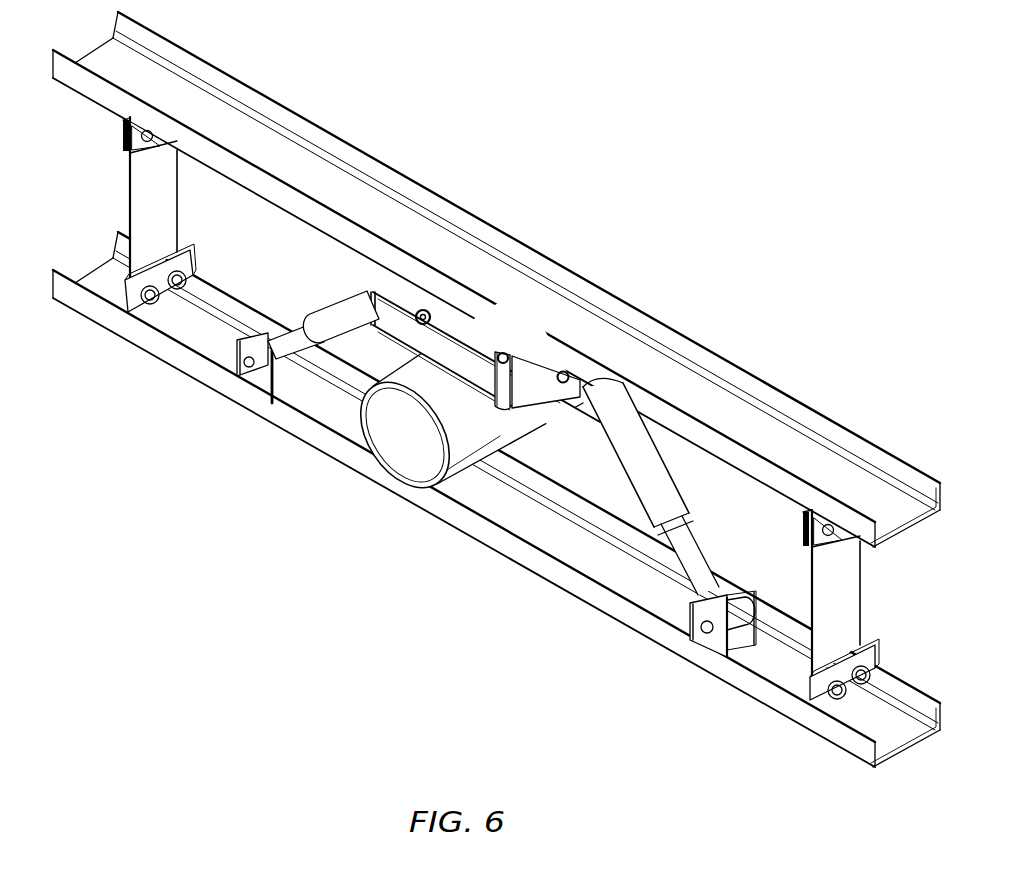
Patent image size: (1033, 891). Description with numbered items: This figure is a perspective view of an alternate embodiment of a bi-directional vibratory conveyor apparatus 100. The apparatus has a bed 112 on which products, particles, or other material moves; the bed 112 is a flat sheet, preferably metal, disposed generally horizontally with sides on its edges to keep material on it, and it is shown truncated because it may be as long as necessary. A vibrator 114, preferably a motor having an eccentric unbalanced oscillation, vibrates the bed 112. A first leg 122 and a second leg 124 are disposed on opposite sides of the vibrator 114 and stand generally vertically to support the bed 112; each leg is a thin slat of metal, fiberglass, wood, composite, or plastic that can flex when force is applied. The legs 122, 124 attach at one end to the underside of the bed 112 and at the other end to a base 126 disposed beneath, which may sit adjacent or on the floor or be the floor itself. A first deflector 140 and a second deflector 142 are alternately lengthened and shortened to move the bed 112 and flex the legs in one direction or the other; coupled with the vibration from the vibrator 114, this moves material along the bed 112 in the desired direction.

The bi-directional conveyor apparatus 100 is at (734, 159).
The bed 112 is at (845, 490).
The vibrator 114 is at (410, 452).
The first leg 122 is at (835, 610).
The second leg 124 is at (150, 222).
The base 126 is at (258, 400).
The first deflector 140 is at (650, 478).
The second deflector 142 is at (345, 312).